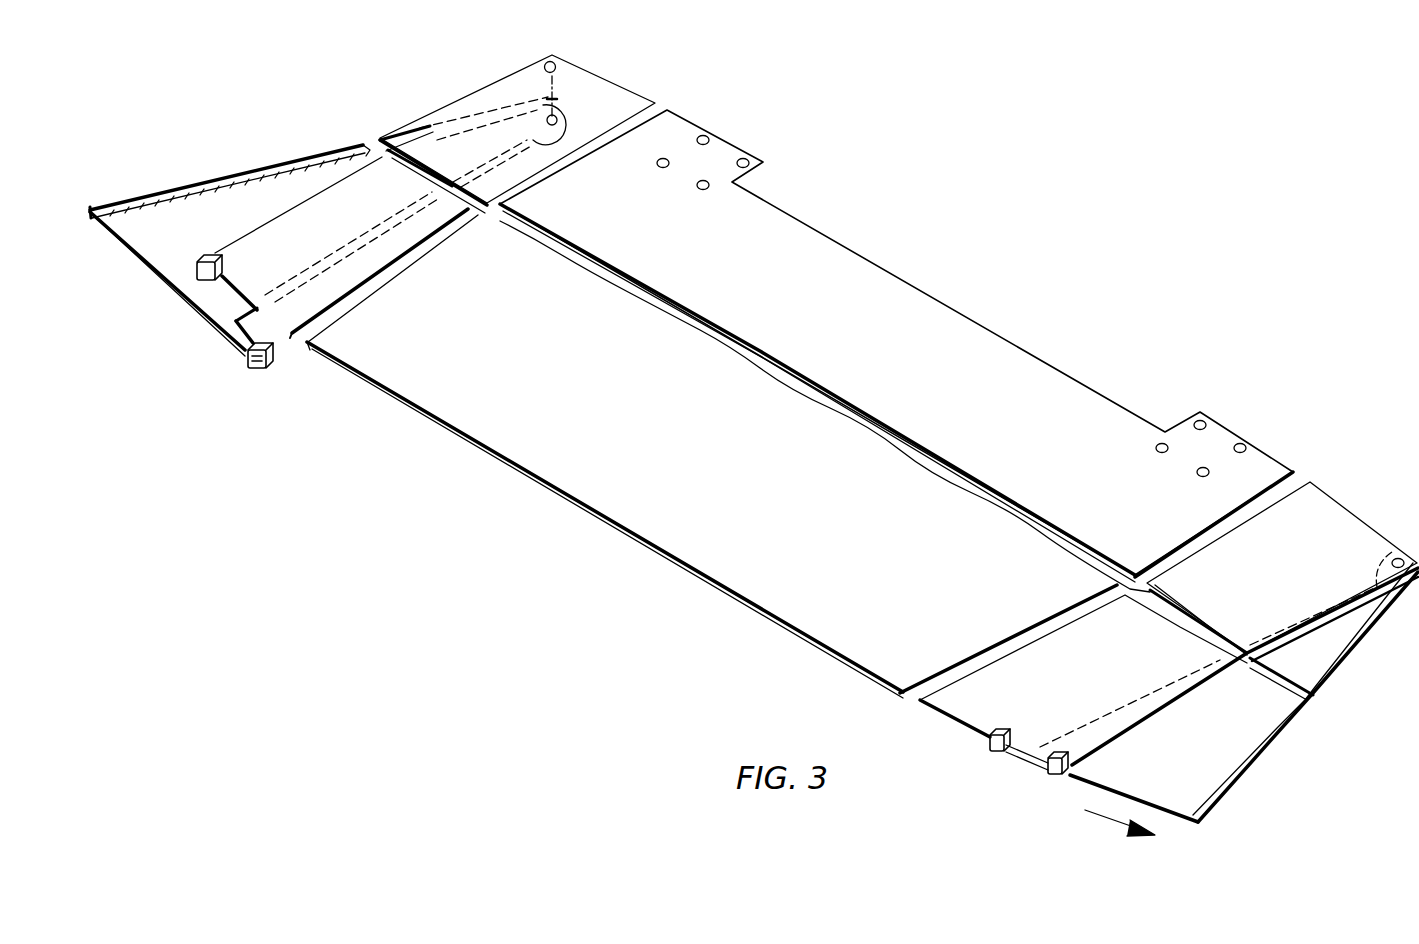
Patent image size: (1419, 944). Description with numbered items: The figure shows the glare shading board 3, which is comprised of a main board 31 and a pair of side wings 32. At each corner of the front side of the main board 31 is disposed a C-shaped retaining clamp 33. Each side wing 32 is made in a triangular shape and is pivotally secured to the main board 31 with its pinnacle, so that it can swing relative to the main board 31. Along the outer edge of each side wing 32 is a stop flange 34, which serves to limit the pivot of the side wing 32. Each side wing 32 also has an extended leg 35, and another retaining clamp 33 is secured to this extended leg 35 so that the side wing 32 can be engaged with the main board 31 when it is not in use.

The glare shading board 3 is at (615, 585).
The main board 31 is at (380, 377).
The side wing 32 is at (160, 253).
The retaining clamp 33 is at (200, 283).
The stop flange 34 is at (121, 206).
The extended leg 35 is at (236, 336).